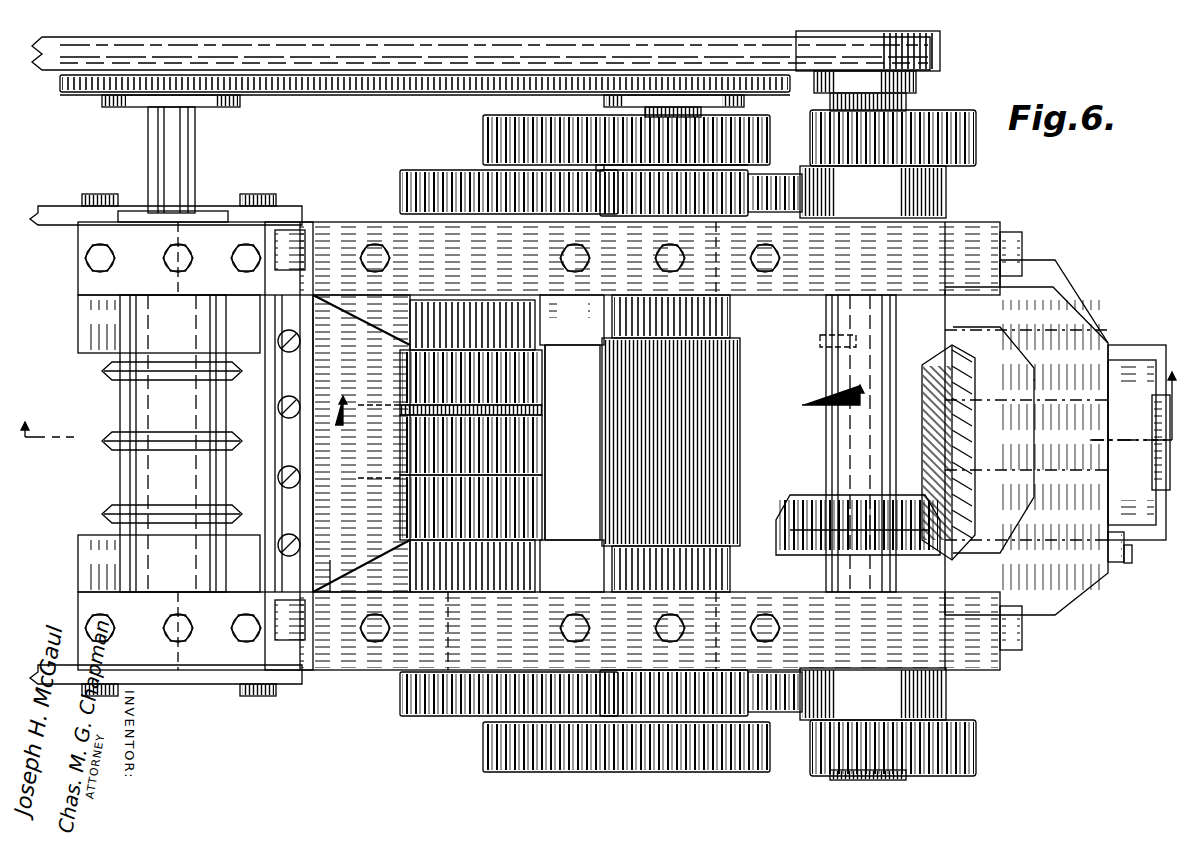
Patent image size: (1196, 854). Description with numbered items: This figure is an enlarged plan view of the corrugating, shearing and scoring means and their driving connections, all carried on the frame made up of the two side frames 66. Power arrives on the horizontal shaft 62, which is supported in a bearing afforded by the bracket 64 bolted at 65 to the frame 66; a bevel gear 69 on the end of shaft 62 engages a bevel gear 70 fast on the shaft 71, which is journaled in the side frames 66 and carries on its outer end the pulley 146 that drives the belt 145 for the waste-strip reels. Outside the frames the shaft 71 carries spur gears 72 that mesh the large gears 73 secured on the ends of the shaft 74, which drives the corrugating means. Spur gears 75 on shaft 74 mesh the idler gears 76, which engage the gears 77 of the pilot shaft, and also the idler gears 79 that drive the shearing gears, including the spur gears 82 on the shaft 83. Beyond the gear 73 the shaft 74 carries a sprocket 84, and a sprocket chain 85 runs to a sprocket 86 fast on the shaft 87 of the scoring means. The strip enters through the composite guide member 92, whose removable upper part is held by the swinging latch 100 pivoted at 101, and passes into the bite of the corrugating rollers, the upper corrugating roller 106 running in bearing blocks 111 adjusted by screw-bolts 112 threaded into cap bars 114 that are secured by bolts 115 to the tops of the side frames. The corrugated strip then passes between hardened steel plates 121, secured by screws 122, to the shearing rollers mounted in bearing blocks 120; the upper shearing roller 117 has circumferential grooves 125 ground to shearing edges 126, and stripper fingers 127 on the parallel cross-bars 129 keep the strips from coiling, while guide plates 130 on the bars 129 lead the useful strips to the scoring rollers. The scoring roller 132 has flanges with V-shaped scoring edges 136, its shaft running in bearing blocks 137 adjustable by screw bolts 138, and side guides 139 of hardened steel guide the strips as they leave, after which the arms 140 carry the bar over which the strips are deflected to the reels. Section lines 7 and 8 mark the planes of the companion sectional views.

The section line 7- 7 is at (602, 392).
The section line 8- 8 is at (600, 392).
The horizontal shaft 62 is at (1160, 540).
The bracket 64 is at (1055, 572).
The bolts 65 is at (1022, 250).
The side frames 66 is at (910, 216).
The bevel gear 69 is at (935, 362).
The bevel gear 70 is at (776, 520).
The shaft 71 is at (826, 312).
The spur gears 72 is at (958, 108).
The large gears 73 is at (483, 135).
The shaft 74 is at (672, 716).
The spur gears 75 is at (740, 668).
The idler gears 76 is at (760, 212).
The gears 77 is at (790, 180).
The idler gears 79 is at (560, 158).
The spur gears 82 is at (400, 180).
The shaft 83 is at (448, 640).
The sprocket 84 is at (606, 100).
The sprocket chain 85 is at (390, 92).
The sprocket 86 is at (222, 105).
The shaft 87 is at (188, 162).
The composite guide member 92 is at (785, 443).
The swinging latch 100 is at (1116, 562).
The pivot 101 is at (1130, 550).
The upper corrugating roller 106 is at (602, 422).
The bearing blocks 111 is at (620, 345).
The screw-bolts 112 is at (654, 238).
The cap bars 114 is at (350, 220).
The bolts 115 is at (362, 252).
The upper shearing roller 117 is at (546, 458).
The bearing blocks 120 is at (361, 443).
The hardened steel plates 121 is at (572, 442).
The screws 122 is at (566, 300).
The circumferential grooves 125 is at (400, 380).
The shearing edges 126 is at (400, 500).
The stripper fingers 127 is at (355, 442).
The cross-bars 129 is at (306, 318).
The guide plates 130 is at (330, 580).
The scoring and flattening roller 132 is at (128, 405).
The V-shaped scoring edges 136 is at (104, 450).
The bearing blocks 137 is at (130, 212).
The screw bolts 138 is at (178, 246).
The side guides 139 is at (80, 312).
The arms 140 is at (52, 206).
The belt 145 is at (308, 58).
The pulley 146 is at (940, 68).